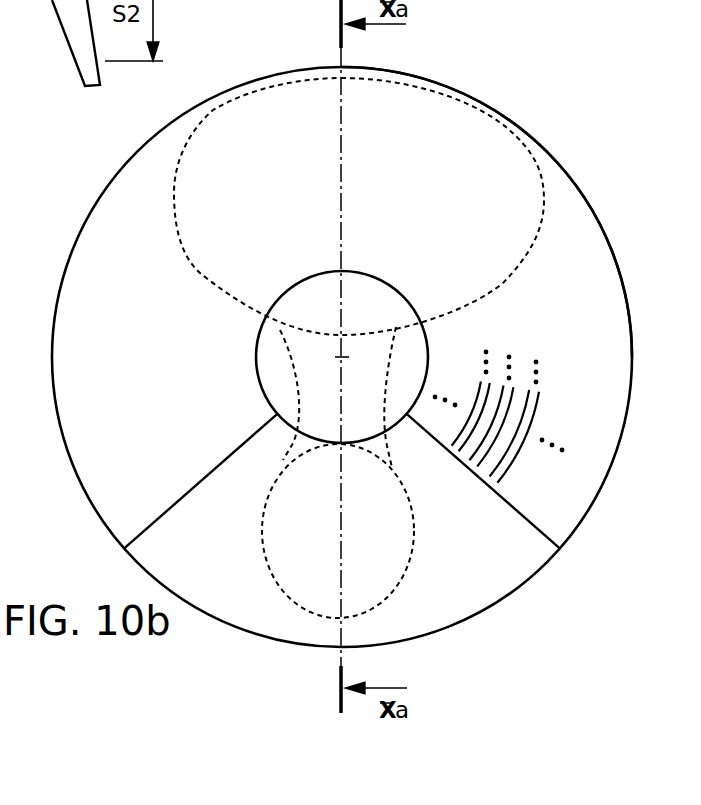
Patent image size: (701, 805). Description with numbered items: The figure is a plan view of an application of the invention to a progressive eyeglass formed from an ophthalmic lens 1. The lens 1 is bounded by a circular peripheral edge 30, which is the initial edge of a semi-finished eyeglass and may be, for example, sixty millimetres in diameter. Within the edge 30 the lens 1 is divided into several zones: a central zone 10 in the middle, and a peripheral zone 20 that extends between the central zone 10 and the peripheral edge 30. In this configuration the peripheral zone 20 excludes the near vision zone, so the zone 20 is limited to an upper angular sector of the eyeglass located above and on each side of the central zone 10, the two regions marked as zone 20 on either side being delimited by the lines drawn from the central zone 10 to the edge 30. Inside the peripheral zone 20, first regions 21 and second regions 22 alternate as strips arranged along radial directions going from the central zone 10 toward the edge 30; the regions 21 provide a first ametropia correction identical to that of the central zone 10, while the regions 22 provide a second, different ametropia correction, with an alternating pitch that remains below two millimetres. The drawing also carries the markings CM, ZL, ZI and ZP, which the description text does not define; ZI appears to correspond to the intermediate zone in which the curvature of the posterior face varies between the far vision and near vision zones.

The ophthalmic lens 1 is at (585, 131).
The central zone 10 is at (357, 312).
The peripheral zone 20 is at (143, 373).
The first region 21 is at (477, 442).
The second region 22 is at (462, 437).
The peripheral edge 30 is at (597, 212).
The center of mass CM is at (359, 370).
The lid zone ZL is at (535, 248).
The intermediate zone ZI is at (295, 373).
The pressure zone ZP is at (265, 571).